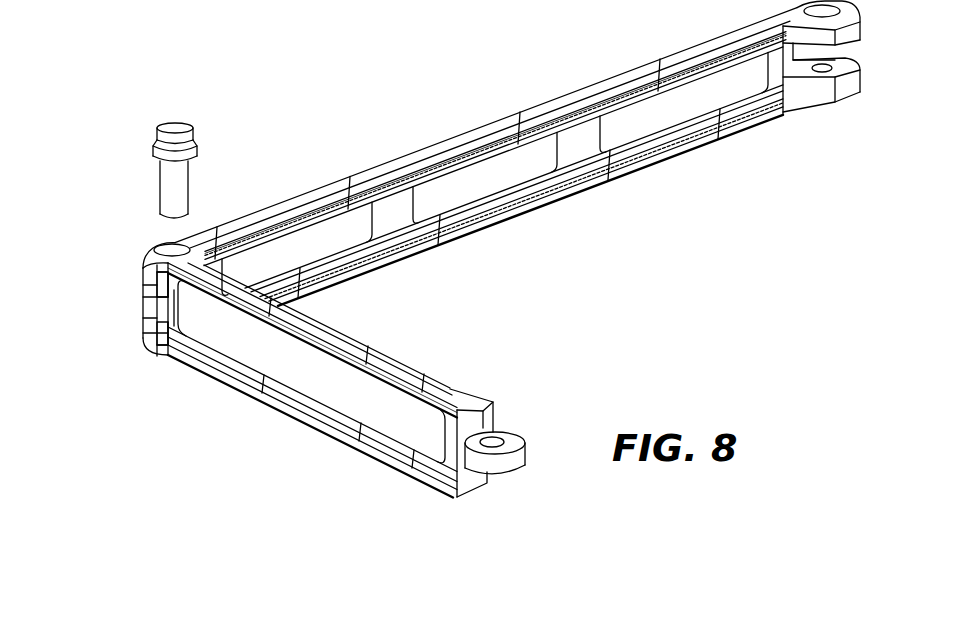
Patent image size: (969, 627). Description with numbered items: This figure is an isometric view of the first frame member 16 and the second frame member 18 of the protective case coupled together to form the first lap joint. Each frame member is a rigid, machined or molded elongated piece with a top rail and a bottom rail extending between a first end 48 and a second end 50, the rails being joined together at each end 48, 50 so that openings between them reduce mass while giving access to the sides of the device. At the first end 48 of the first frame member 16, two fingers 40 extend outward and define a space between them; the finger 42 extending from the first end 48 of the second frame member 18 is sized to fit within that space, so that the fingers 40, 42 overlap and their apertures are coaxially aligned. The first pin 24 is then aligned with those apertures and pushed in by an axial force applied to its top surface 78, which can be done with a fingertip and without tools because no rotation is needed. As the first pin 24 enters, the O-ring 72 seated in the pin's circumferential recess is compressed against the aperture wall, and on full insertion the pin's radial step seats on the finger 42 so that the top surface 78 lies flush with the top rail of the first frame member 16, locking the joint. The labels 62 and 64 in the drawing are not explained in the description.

The first frame member 16 is at (499, 114).
The second frame member 18 is at (294, 426).
The first pin 24 is at (170, 193).
The fingers 40 is at (102, 316).
The finger 42 is at (146, 305).
The first end 48 is at (309, 114).
The second end 50 is at (789, 146).
The upper detent surface 62 is at (152, 282).
The lower detent surface 64 is at (148, 333).
The O-ring 72 is at (197, 151).
The top surface 78 is at (177, 126).